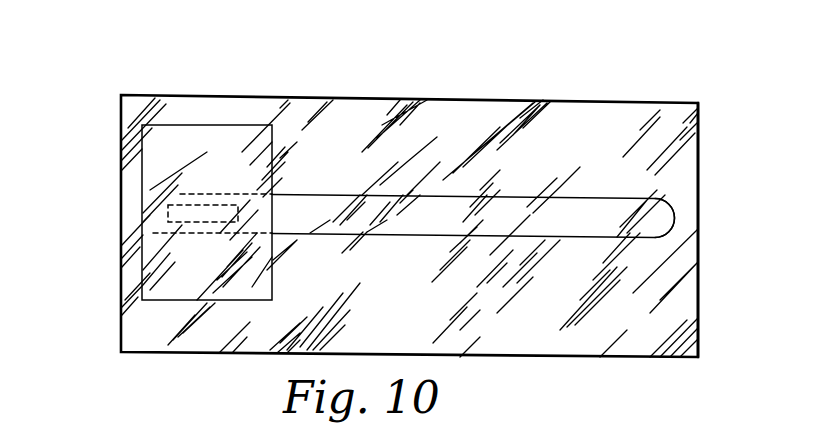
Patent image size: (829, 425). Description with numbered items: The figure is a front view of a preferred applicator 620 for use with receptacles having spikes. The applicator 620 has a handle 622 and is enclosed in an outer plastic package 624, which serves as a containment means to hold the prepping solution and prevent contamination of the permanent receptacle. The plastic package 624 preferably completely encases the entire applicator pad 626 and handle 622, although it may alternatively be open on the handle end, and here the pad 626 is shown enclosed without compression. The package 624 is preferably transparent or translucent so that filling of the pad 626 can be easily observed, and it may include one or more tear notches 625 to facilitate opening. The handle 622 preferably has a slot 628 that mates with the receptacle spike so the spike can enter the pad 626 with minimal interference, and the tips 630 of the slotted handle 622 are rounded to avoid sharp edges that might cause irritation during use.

The applicator 620 is at (582, 198).
The handle 622 is at (663, 221).
The outer plastic package 624 is at (365, 97).
The tear notch 625 is at (665, 112).
The sponge/pad 626 is at (223, 130).
The slot 628 is at (200, 220).
The tips of the slotted handle 630 is at (153, 235).